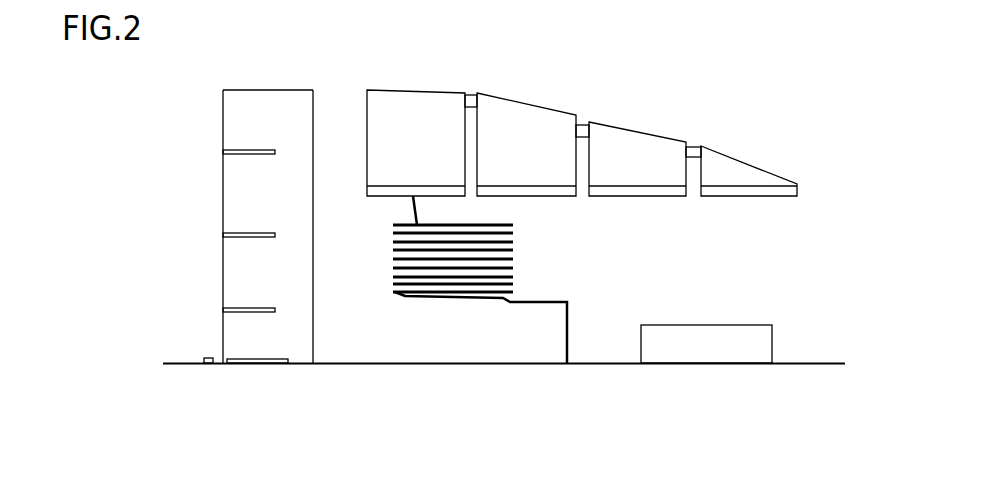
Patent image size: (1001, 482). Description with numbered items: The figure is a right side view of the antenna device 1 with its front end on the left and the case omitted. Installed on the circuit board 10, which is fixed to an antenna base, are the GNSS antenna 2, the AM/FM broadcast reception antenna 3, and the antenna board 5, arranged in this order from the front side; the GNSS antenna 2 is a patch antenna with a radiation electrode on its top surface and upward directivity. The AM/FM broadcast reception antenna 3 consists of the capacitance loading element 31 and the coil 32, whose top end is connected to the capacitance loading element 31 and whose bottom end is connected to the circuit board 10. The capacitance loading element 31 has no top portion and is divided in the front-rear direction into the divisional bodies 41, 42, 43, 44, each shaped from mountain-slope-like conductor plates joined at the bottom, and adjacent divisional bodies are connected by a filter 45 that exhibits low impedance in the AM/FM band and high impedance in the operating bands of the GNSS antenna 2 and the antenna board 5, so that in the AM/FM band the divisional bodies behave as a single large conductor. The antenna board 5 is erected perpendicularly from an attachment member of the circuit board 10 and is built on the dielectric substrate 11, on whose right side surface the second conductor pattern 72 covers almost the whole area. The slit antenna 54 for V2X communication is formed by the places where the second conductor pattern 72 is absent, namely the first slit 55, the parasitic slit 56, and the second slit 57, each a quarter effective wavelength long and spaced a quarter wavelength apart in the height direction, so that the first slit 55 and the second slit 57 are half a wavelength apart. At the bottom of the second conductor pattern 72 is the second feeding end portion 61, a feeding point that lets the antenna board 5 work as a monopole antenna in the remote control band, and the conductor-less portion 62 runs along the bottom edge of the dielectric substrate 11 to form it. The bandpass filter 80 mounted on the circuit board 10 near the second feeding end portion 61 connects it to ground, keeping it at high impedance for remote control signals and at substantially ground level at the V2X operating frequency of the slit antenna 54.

The antenna device 1 is at (661, 468).
The GNSS antenna 2 is at (735, 338).
The AM/FM broadcast reception antenna 3 is at (557, 208).
The antenna board 5 is at (233, 87).
The circuit board 10 is at (815, 363).
The dielectric substrate 11 is at (297, 90).
The capacitance loading element 31 is at (500, 93).
The coil 32 is at (405, 294).
The divisional body 41 is at (745, 175).
The divisional body 42 is at (640, 138).
The divisional body 43 is at (548, 118).
The divisional body 44 is at (405, 88).
The filter 45 is at (472, 95).
The slit antenna 54 is at (158, 132).
The first slit 55 is at (232, 150).
The parasitic slit 56 is at (232, 233).
The second slit 57 is at (232, 308).
The second feeding end portion 61 is at (224, 366).
The conductor-less portion 62 is at (260, 366).
The second conductor pattern 72 is at (308, 335).
The bandpass filter 80 is at (208, 366).